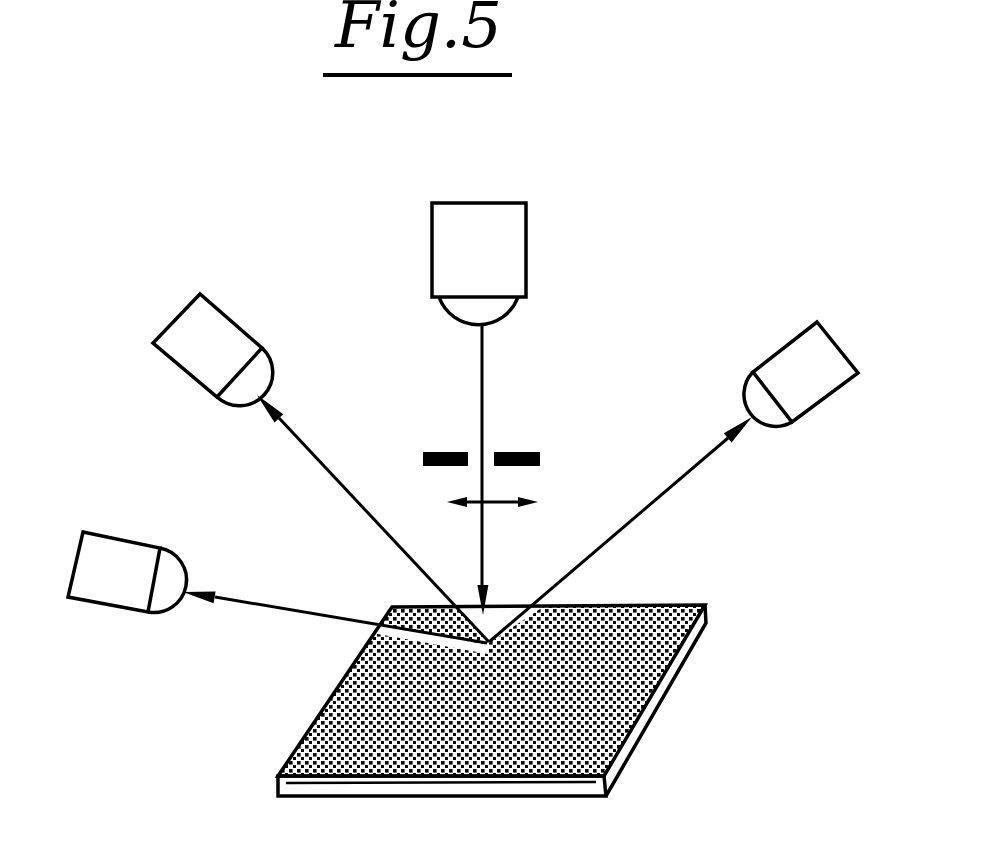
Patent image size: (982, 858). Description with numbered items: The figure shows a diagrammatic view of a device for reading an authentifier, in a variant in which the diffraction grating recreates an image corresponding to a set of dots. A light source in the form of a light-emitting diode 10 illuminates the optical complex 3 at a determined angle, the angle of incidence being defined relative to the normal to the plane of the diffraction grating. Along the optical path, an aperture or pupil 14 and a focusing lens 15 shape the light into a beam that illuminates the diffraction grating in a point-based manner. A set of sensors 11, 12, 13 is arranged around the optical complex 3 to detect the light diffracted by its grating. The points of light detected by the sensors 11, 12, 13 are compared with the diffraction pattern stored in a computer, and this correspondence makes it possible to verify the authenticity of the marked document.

The optical complex 3 is at (660, 695).
The light-emitting diode 10 is at (511, 277).
The sensor 11 is at (145, 584).
The sensor 12 is at (236, 367).
The sensor 13 is at (830, 394).
The aperture or pupil 14 is at (525, 451).
The focusing lens 15 is at (445, 502).